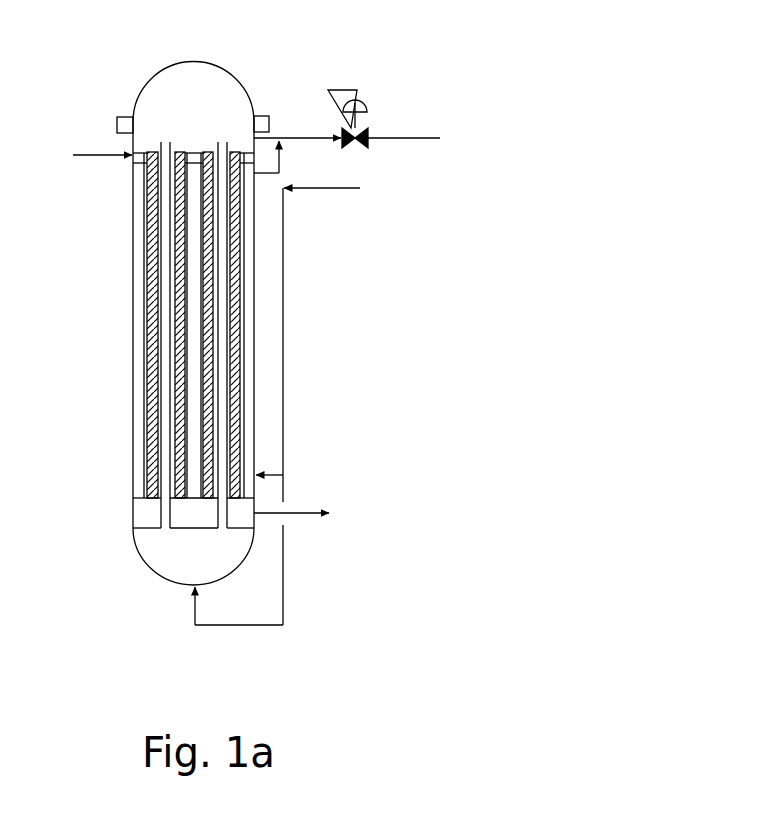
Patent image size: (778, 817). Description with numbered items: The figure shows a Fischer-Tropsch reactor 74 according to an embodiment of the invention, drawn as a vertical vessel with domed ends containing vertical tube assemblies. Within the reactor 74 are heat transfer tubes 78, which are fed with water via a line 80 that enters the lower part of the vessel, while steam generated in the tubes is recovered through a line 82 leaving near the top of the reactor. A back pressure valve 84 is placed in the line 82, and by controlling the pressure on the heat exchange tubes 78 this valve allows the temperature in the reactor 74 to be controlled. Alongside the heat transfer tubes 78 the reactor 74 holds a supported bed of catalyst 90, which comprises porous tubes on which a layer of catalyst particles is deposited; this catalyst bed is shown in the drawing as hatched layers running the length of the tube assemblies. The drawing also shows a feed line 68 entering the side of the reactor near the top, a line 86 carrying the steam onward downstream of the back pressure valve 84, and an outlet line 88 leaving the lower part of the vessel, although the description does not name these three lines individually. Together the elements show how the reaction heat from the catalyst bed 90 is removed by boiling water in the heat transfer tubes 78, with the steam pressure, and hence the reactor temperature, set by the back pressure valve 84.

The feed inlet line 68 is at (78, 155).
The Fischer-Tropsch reactor 74 is at (150, 78).
The heat transfer tubes 78 is at (148, 402).
The line 80 is at (283, 235).
The line 82 is at (310, 137).
The back pressure valve 84 is at (342, 88).
The product outlet line 86 is at (418, 136).
The retentate outlet line 88 is at (298, 515).
The supported bed of catalyst 90 is at (233, 345).